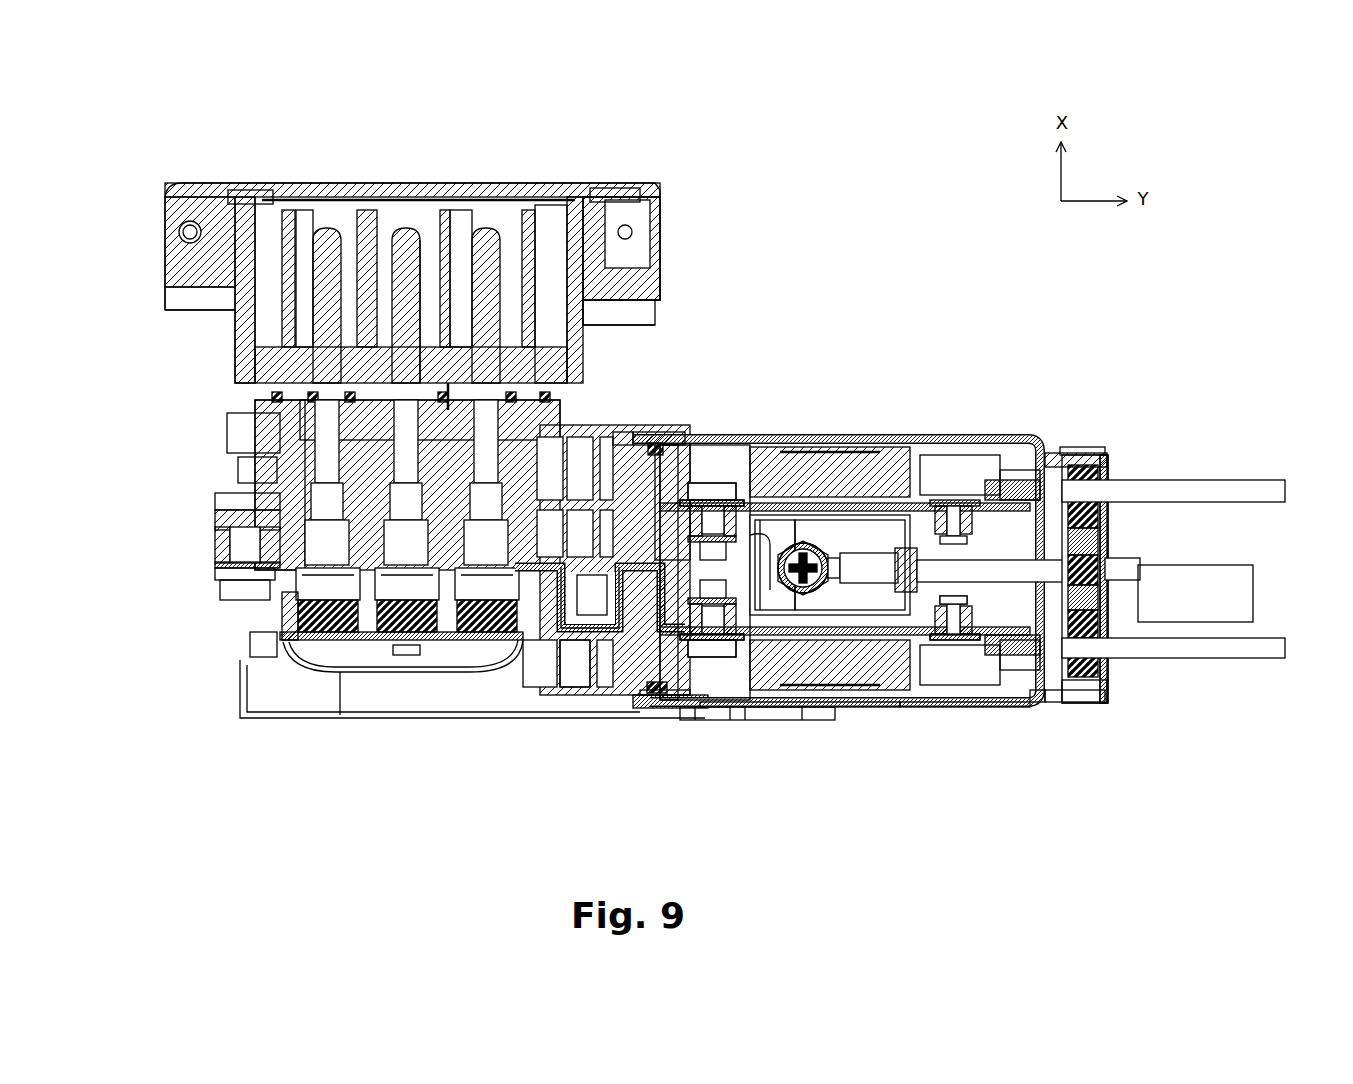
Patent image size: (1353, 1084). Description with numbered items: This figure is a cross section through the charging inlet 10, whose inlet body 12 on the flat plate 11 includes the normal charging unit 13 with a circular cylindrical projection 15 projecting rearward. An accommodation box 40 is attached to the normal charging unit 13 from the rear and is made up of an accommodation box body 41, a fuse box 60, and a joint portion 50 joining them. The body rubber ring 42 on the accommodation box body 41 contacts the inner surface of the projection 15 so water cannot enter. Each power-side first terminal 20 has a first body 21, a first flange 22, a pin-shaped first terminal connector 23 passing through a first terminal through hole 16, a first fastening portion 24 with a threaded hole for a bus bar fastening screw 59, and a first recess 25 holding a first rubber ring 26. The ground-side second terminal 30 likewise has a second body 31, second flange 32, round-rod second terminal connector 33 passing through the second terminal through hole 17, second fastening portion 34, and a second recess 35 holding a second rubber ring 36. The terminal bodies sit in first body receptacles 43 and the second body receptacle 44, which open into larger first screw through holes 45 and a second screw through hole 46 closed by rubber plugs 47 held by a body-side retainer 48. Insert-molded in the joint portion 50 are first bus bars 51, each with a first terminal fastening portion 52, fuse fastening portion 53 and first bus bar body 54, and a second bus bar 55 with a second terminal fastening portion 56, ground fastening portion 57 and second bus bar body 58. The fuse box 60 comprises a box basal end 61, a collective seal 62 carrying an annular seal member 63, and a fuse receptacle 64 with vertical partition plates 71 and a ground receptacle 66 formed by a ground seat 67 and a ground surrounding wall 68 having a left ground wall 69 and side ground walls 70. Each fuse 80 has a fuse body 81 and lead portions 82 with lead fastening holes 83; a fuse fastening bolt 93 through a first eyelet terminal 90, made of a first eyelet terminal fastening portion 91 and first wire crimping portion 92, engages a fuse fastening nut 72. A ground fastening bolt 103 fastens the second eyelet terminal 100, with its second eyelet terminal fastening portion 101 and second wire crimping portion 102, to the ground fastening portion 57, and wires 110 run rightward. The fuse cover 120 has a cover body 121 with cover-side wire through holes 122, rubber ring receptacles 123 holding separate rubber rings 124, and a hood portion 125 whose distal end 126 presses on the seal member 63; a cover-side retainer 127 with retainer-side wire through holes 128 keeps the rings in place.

The charging inlet 10 is at (883, 155).
The flat plate 11 is at (175, 275).
The inlet body 12 is at (572, 200).
The normal charging unit 13 is at (572, 200).
The circular cylindrical projection 15 is at (545, 270).
The first terminal through holes 16 is at (510, 215).
The second terminal through hole 17 is at (446, 225).
The first terminal 20 is at (486, 215).
The first body 21 is at (330, 425).
The first flange 22 is at (245, 195).
The first terminal connector 23 is at (345, 215).
The first fastening portion 24 is at (250, 500).
The first recess 25 is at (300, 215).
The first rubber ring 26 is at (275, 200).
The second terminal 30 is at (406, 215).
The second body 31 is at (300, 440).
The second flange 32 is at (365, 215).
The second terminal connector 33 is at (426, 225).
The second fastening portion 34 is at (320, 545).
The second recess 35 is at (380, 215).
The second rubber ring 36 is at (462, 215).
The accommodation box 40 is at (280, 655).
The accommodation box body 41 is at (290, 445).
The body rubber ring 42 is at (275, 396).
The first body receptacles 43 is at (265, 470).
The second body receptacle 44 is at (235, 450).
The first screw through holes 45 is at (480, 615).
The second screw through hole 46 is at (405, 615).
The rubber plugs 47 is at (315, 645).
The body-side retainer 48 is at (328, 642).
The joint portion 50 is at (540, 578).
The first bus bar 51 is at (520, 645).
The first terminal fastening portion 52 is at (555, 632).
The fuse fastening portion 53 is at (660, 620).
The first bus bar body 54 is at (580, 665).
The second bus bar 55 is at (762, 582).
The second terminal fastening portion 56 is at (365, 622).
The ground fastening portion 57 is at (800, 505).
The second bus bar body 58 is at (765, 480).
The bus bar fastening screw 59 is at (310, 580).
The fuse box 60 is at (722, 418).
The box basal end 61 is at (612, 705).
The collective seal 62 is at (672, 695).
The seal member 63 is at (655, 695).
The fuse receptacle 64 is at (710, 450).
The ground receptacle 66 is at (820, 648).
The ground seat 67 is at (905, 500).
The ground surrounding wall 68 is at (850, 322).
The left ground wall 69 is at (770, 520).
The side ground walls 70 is at (810, 520).
The vertical partition plates 71 is at (935, 465).
The fuse fastening nuts 72 is at (712, 565).
The fuse 80 is at (940, 642).
The fuse body 81 is at (848, 692).
The lead portions 82 is at (732, 640).
The lead fastening hole 83 is at (700, 660).
The first eyelet terminal 90 is at (1100, 322).
The first eyelet terminal fastening portion 91 is at (1050, 470).
The first wire crimping portion 92 is at (1085, 470).
The fuse fastening bolt 93 is at (1000, 480).
The second eyelet terminal 100 is at (870, 312).
The second eyelet terminal fastening portion 101 is at (830, 560).
The second wire crimping portion 102 is at (790, 548).
The ground fastening bolt 103 is at (790, 620).
The wire 110 is at (1150, 655).
The fuse cover 120 is at (865, 708).
The cover body 121 is at (1195, 485).
The cover-side wire through holes 122 is at (1068, 702).
The rubber ring receptacles 123 is at (1095, 453).
The separate rubber rings 124 is at (1080, 703).
The hood portion 125 is at (960, 708).
The distal end 126 is at (655, 441).
The cover-side retainer 127 is at (1058, 700).
The retainer-side wire through holes 128 is at (1110, 520).